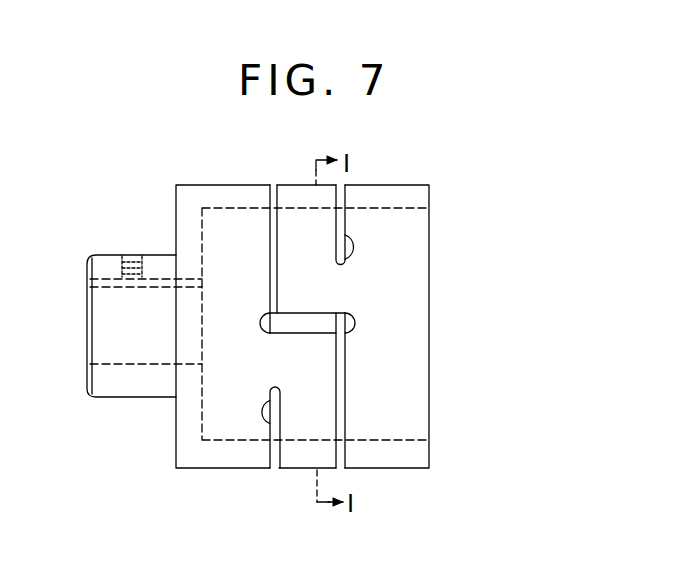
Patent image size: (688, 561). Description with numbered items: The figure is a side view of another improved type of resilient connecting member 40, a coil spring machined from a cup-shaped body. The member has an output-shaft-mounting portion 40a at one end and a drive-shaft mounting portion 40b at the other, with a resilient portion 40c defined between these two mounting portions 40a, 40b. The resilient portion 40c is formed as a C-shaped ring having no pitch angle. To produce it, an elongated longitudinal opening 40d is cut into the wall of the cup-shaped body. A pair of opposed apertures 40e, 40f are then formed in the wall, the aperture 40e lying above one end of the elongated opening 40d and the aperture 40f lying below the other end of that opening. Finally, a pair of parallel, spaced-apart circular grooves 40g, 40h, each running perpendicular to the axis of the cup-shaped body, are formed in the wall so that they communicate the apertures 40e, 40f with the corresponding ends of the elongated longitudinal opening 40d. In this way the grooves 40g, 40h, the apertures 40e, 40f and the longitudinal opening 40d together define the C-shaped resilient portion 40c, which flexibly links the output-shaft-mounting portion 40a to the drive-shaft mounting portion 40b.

The resilient connecting member 40 is at (183, 202).
The output-shaft-mounting portion 40a is at (107, 264).
The drive-shaft mounting portion 40b is at (418, 193).
The resilient portion 40c is at (298, 192).
The elongated longitudinal opening 40d is at (303, 317).
The aperture 40e is at (263, 403).
The aperture 40f is at (352, 249).
The circular groove 40g is at (273, 187).
The circular groove 40h is at (340, 188).